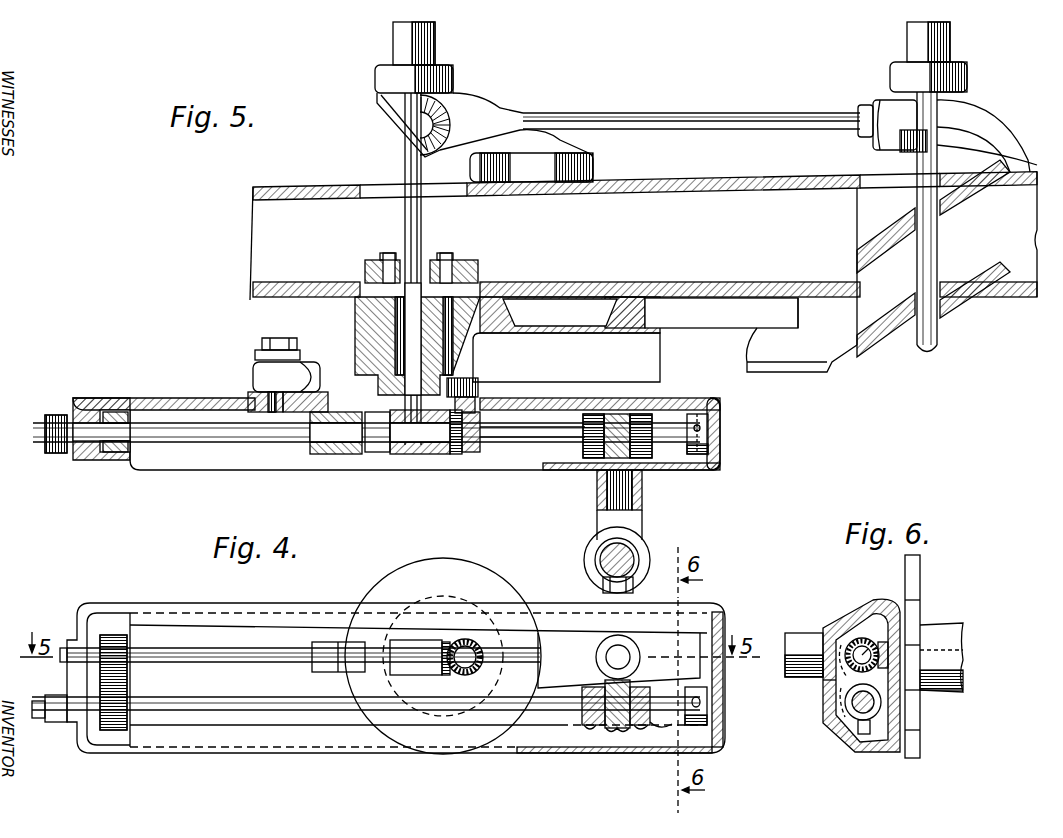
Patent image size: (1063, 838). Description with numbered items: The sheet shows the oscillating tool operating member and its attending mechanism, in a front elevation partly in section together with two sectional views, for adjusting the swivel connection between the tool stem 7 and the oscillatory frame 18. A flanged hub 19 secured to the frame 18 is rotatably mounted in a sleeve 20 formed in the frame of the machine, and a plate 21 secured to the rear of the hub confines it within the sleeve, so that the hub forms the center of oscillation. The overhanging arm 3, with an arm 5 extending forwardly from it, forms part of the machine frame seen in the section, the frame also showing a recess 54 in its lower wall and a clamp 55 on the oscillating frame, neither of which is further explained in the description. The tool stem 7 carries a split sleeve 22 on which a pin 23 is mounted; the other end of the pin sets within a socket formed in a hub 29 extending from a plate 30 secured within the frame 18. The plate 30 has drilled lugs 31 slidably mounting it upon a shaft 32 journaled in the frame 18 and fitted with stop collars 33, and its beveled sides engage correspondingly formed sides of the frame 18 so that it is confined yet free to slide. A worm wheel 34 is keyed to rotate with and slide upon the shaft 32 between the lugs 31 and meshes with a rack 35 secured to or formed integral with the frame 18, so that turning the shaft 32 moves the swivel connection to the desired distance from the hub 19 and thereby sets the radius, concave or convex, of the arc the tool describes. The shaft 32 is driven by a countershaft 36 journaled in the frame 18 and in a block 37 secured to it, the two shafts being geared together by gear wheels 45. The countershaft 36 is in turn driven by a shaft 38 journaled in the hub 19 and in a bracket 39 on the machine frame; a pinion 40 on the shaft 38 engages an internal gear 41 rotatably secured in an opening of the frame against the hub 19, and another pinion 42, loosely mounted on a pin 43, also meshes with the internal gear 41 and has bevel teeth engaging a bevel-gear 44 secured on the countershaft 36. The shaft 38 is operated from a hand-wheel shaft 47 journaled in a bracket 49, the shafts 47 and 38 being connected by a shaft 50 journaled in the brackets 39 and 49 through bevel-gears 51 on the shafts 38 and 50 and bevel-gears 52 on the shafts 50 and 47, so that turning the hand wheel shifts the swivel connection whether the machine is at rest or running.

In FIG. 5, the overhanging arm 3 is at (665, 184).
In FIG. 5, the arm 5 is at (806, 356).
In FIG. 5, the tool stem 7 is at (612, 558).
In FIG. 5, the oscillatory frame 18 is at (177, 401).
In FIG. 4, the oscillatory frame 18 is at (290, 603).
In FIG. 6, the oscillatory frame 18 is at (862, 609).
In FIG. 5, the flanged hub 19 is at (440, 366).
In FIG. 6, the flanged hub 19 is at (944, 696).
In FIG. 5, the sleeve 20 is at (355, 331).
In FIG. 5, the plate 21 is at (445, 266).
In FIG. 5, the split sleeve 22 is at (602, 568).
In FIG. 5, the pin 23 is at (612, 495).
In FIG. 5, the hub 29 is at (645, 505).
In FIG. 4, the hub 29 is at (598, 657).
In FIG. 6, the hub 29 is at (790, 641).
In FIG. 5, the plate 30 is at (673, 472).
In FIG. 4, the plate 30 is at (700, 679).
In FIG. 6, the plate 30 is at (828, 683).
In FIG. 5, the drilled lugs 31 is at (596, 414).
In FIG. 4, the drilled lugs 31 is at (591, 730).
In FIG. 6, the drilled lugs 31 is at (850, 708).
In FIG. 5, the shaft 32 is at (495, 446).
In FIG. 4, the shaft 32 is at (316, 712).
In FIG. 6, the shaft 32 is at (845, 738).
In FIG. 5, the stop collars 33 is at (712, 452).
In FIG. 4, the stop collars 33 is at (722, 721).
In FIG. 5, the worm wheel 34 is at (618, 414).
In FIG. 4, the worm wheel 34 is at (617, 733).
In FIG. 4, the rack 35 is at (648, 740).
In FIG. 6, the rack 35 is at (853, 748).
In FIG. 5, the countershaft 36 is at (227, 443).
In FIG. 4, the countershaft 36 is at (225, 663).
In FIG. 6, the countershaft 36 is at (856, 636).
In FIG. 5, the block 37 is at (335, 457).
In FIG. 4, the block 37 is at (318, 673).
In FIG. 5, the shaft 38 is at (405, 229).
In FIG. 5, the bracket 39 is at (394, 52).
In FIG. 5, the pinion 40 is at (400, 454).
In FIG. 5, the internal gear 41 is at (385, 446).
In FIG. 4, the internal gear 41 is at (452, 688).
In FIG. 5, the pinion 42 is at (458, 455).
In FIG. 4, the pinion 42 is at (451, 690).
In FIG. 6, the pinion 42 is at (890, 642).
In FIG. 5, the pin 43 is at (472, 398).
In FIG. 4, the pin 43 is at (468, 660).
In FIG. 5, the bevel-gear 44 is at (455, 455).
In FIG. 4, the bevel-gear 44 is at (422, 700).
In FIG. 6, the bevel-gear 44 is at (862, 632).
In FIG. 5, the gear wheels 45 is at (113, 455).
In FIG. 4, the gear wheels 45 is at (127, 672).
In FIG. 5, the shaft 47 is at (937, 258).
In FIG. 5, the bracket 49 is at (1003, 128).
In FIG. 5, the shaft 50 is at (717, 119).
In FIG. 5, the bevel-gears 51 is at (406, 112).
In FIG. 5, the bevel-gears 52 is at (940, 105).
In FIG. 5, the recess 54 is at (538, 322).
In FIG. 5, the clamp screw 55 is at (306, 377).